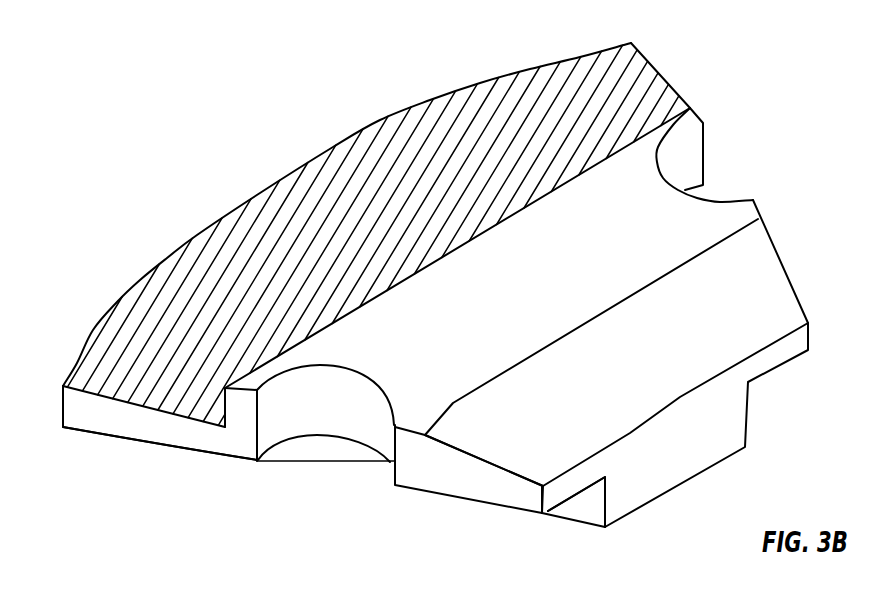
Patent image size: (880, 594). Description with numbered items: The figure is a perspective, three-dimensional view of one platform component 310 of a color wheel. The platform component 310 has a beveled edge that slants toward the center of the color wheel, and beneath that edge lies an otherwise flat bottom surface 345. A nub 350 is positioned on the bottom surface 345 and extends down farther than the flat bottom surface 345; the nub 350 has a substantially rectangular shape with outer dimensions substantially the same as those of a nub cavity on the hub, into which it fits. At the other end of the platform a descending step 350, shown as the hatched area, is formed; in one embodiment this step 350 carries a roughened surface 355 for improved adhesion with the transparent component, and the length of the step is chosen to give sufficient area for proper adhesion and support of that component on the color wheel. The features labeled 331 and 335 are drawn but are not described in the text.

The platform component 310 is at (115, 146).
The semicircular notch 331 is at (732, 177).
The semicircular cutout 335 is at (328, 457).
The bottom surface 345 is at (538, 520).
The nub 350 is at (137, 345).
The roughened surface 355 is at (333, 183).